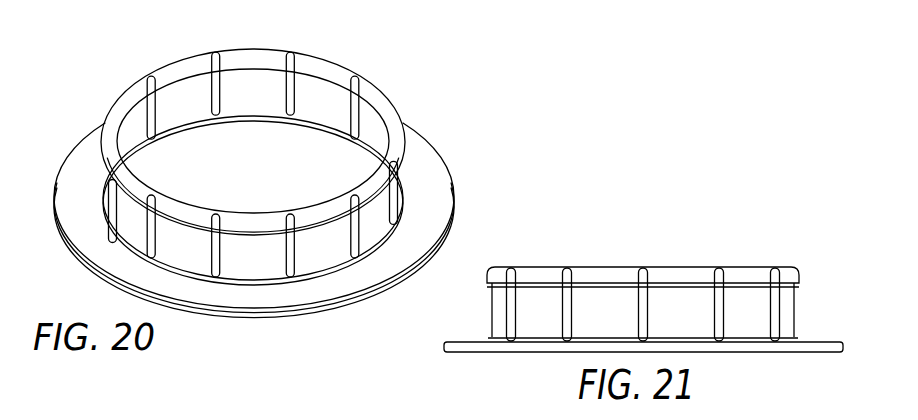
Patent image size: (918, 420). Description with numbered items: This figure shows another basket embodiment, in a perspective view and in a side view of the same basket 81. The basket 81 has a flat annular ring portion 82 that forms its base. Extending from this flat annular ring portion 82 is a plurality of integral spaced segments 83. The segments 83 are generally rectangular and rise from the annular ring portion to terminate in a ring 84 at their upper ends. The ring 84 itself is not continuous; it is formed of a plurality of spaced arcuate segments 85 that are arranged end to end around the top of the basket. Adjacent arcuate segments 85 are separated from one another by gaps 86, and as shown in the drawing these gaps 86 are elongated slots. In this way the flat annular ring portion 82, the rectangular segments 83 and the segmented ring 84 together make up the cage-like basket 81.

In FIG. 20, the basket 81 is at (456, 121).
In FIG. 21, the basket 81 is at (690, 198).
In FIG. 20, the flat annular ring portion 82 is at (427, 207).
In FIG. 21, the flat annular ring portion 82 is at (456, 343).
In FIG. 20, the spaced segments 83 is at (255, 260).
In FIG. 21, the spaced segments 83 is at (596, 308).
In FIG. 20, the ring 84 is at (292, 42).
In FIG. 20, the arcuate segments 85 is at (241, 54).
In FIG. 21, the gaps 86 is at (566, 274).